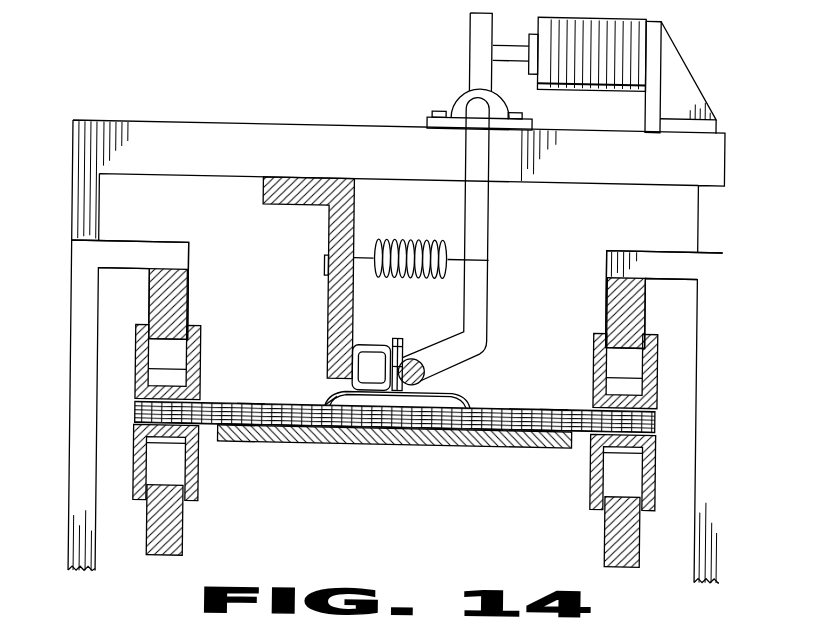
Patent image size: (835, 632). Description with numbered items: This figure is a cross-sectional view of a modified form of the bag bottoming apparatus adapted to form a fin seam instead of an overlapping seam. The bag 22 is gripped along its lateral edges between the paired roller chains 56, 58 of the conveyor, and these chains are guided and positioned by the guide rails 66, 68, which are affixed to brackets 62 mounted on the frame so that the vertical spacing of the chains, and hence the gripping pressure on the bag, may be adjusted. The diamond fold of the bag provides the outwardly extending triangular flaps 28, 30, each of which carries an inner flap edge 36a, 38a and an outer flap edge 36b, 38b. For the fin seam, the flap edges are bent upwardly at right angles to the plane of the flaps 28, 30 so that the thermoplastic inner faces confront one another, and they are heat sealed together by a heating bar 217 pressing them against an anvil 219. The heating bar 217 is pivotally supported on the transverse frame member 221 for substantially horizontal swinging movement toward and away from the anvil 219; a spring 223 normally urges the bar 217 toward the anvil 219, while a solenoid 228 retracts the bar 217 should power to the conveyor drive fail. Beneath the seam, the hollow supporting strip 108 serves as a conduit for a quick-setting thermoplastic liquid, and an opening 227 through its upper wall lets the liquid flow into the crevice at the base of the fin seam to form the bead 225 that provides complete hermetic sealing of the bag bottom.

The transverse frame member 221 is at (230, 127).
The solenoid 228 is at (575, 82).
The spring 223 is at (423, 233).
The heating bar 217 is at (426, 364).
The anvil 219 is at (357, 356).
The inner flap edge 36a is at (396, 334).
The inner flap edge 38a is at (402, 334).
The outer flap edge 36b is at (395, 339).
The outer flap edge 38b is at (405, 339).
The bracket 62 is at (80, 301).
The guide rail 66 is at (162, 285).
The roller chain 56 is at (142, 356).
The roller chain 58 is at (139, 467).
The guide rail 68 is at (149, 524).
The bag 22 is at (126, 409).
The triangular flap 28 is at (253, 397).
The triangular flap 30 is at (556, 396).
The opening 227 is at (392, 384).
The bead 225 is at (400, 384).
The supporting strip 108 is at (386, 384).